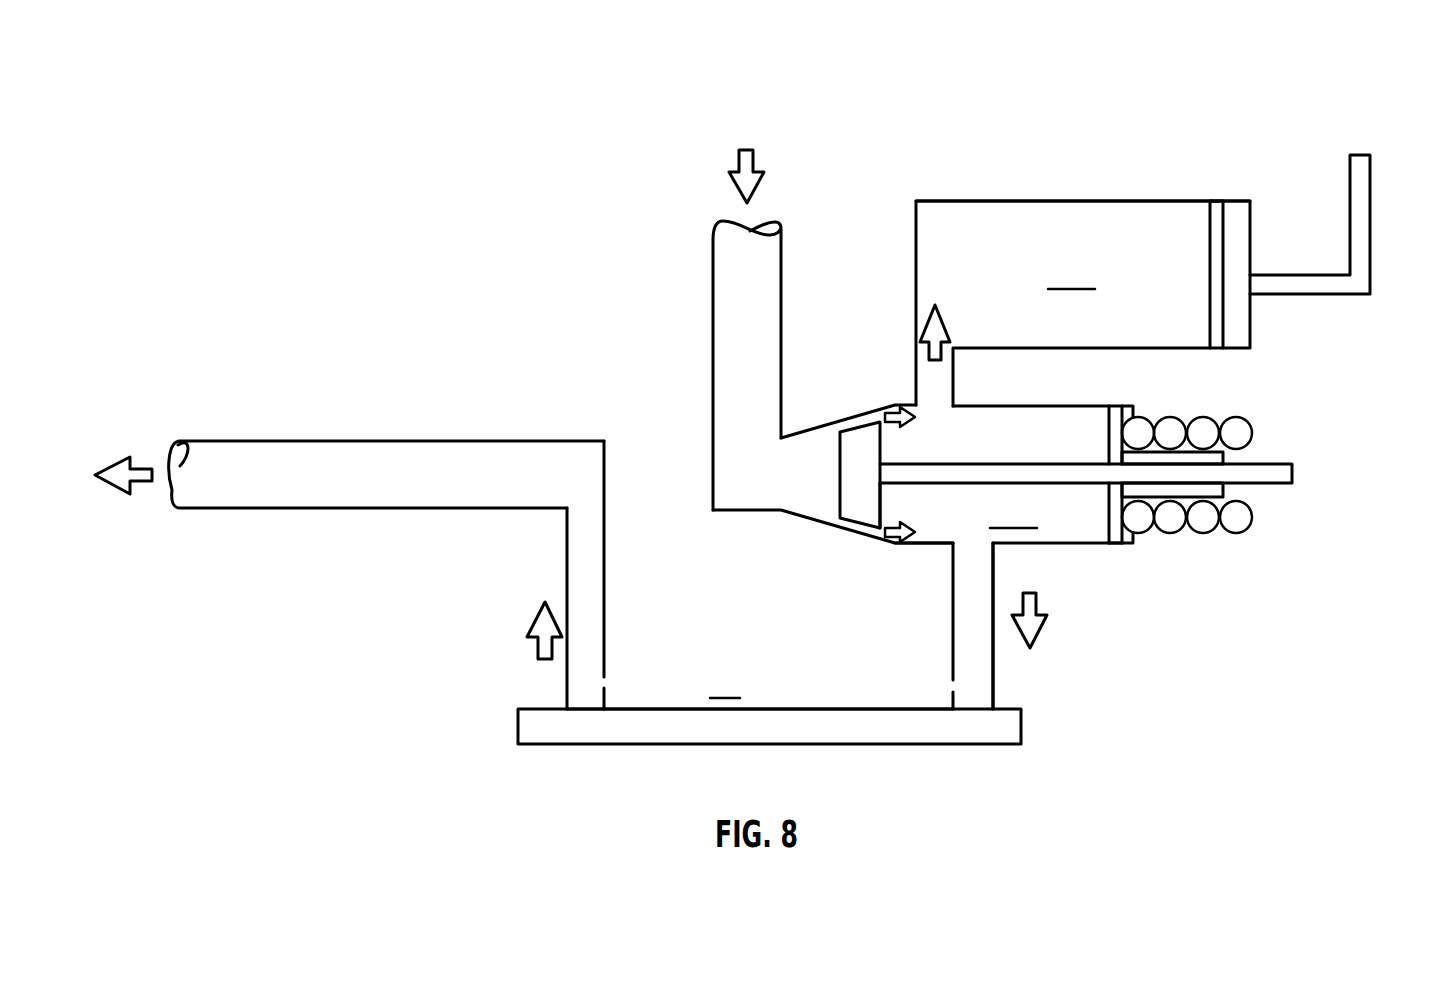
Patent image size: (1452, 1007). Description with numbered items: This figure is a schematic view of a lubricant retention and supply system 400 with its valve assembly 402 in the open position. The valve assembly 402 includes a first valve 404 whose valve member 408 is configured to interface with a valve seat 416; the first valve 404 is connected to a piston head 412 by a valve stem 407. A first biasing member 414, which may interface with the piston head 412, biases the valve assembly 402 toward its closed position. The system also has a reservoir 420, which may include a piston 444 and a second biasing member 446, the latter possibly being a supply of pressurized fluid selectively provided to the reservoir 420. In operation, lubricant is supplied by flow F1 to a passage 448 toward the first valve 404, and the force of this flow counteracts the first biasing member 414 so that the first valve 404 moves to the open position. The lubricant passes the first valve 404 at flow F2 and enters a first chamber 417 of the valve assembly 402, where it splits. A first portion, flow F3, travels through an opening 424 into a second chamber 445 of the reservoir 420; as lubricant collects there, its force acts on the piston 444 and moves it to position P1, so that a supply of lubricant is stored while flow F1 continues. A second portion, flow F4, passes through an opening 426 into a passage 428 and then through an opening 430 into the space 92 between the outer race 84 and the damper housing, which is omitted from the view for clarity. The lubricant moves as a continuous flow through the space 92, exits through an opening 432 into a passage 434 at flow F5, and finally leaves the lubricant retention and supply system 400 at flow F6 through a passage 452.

The lubricant retention and supply system 400 is at (203, 86).
The passage 448 is at (782, 262).
The first valve 404 is at (854, 414).
The valve seat 416 is at (803, 521).
The valve member 408 is at (855, 522).
The opening 424 is at (930, 404).
The valve stem 407 is at (928, 532).
The second chamber 445 is at (1083, 303).
The reservoir 420 is at (1110, 201).
The piston 444 is at (1226, 312).
The second biasing member 446 is at (1371, 215).
The first chamber 417 is at (1043, 474).
The piston head 412 is at (1108, 513).
The valve assembly 402 is at (1114, 547).
The first biasing member 414 is at (1168, 418).
The opening 430 is at (951, 685).
The opening 426 is at (966, 547).
The passage 428 is at (993, 700).
The outer race 84 is at (1021, 725).
The space 92 is at (760, 686).
The passage 434 is at (563, 543).
The opening 432 is at (605, 684).
The passage 452 is at (430, 441).
The flow F1 is at (745, 165).
The flow F2 is at (958, 483).
The flow F3 is at (933, 332).
The flow F4 is at (1037, 627).
The flow F5 is at (543, 625).
The flow F6 is at (120, 470).
The position P1 is at (1218, 212).